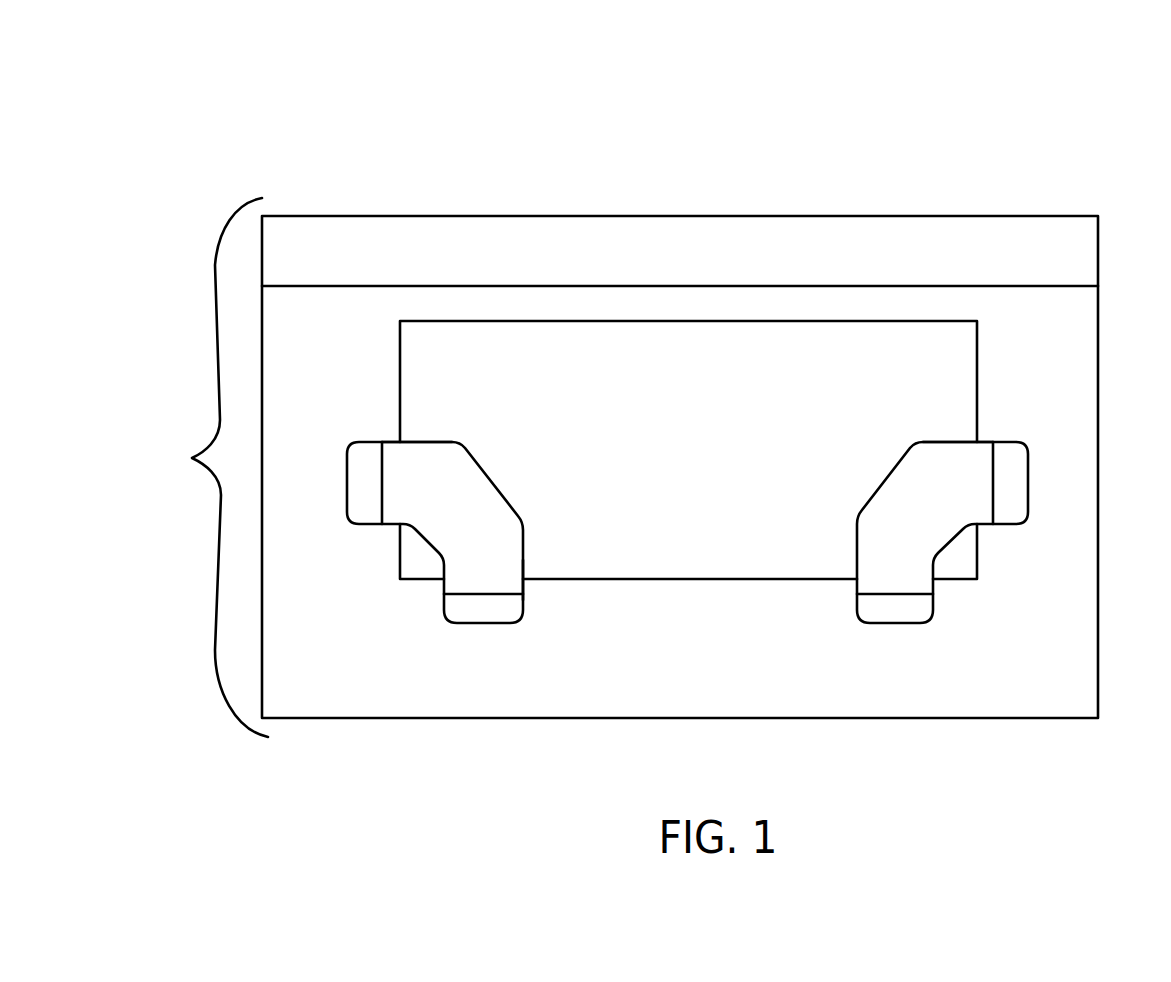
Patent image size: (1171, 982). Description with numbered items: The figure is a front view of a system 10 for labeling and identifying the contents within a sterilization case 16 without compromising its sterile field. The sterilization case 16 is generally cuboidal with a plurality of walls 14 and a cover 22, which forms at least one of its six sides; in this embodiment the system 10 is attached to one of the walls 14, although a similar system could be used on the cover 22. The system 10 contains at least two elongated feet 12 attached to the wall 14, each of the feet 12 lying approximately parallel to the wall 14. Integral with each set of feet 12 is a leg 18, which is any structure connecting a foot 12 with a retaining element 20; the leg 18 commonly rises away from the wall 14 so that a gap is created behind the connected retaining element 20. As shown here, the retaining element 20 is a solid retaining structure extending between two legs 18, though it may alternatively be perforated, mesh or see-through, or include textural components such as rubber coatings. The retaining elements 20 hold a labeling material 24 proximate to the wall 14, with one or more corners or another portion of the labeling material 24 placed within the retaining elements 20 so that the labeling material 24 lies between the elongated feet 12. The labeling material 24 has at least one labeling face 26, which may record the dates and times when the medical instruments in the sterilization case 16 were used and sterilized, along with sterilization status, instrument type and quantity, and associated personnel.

The system 10 is at (1022, 134).
The elongated feet 12 is at (357, 500).
The wall 14 is at (1063, 528).
The sterilization case 16 is at (212, 467).
The leg 18 is at (399, 450).
The retaining element 20 is at (488, 482).
The cover 22 is at (871, 233).
The labeling material 24 is at (977, 353).
The labeling face 26 is at (663, 388).